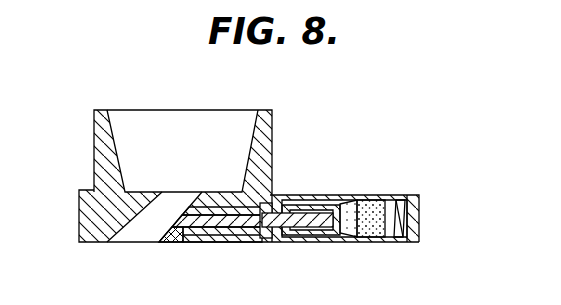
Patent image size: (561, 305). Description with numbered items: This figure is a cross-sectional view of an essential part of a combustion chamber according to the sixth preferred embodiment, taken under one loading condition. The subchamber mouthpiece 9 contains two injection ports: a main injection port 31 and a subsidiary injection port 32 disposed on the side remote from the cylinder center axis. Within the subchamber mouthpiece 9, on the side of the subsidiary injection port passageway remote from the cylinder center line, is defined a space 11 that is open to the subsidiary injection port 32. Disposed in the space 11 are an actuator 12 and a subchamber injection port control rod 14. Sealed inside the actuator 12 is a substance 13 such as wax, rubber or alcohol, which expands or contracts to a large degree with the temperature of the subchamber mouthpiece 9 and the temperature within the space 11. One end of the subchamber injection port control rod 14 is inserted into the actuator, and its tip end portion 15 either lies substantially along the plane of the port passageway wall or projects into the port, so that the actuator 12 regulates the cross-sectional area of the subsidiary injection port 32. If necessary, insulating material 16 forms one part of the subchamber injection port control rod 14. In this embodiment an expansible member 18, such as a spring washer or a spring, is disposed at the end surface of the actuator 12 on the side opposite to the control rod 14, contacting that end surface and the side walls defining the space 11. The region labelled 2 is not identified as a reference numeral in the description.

The cavity / opening of cup 2 is at (243, 123).
The subchamber mouthpiece 9 is at (263, 155).
The space 11 is at (337, 240).
The actuator 12 is at (308, 246).
The substance 13 is at (378, 240).
The subchamber injection port control rod 14 is at (235, 245).
The tip end portion 15 is at (167, 245).
The insulating material 16 is at (255, 243).
The expansible member 18 is at (407, 212).
The main injection port 31 is at (118, 245).
The subsidiary injection port 32 is at (188, 245).